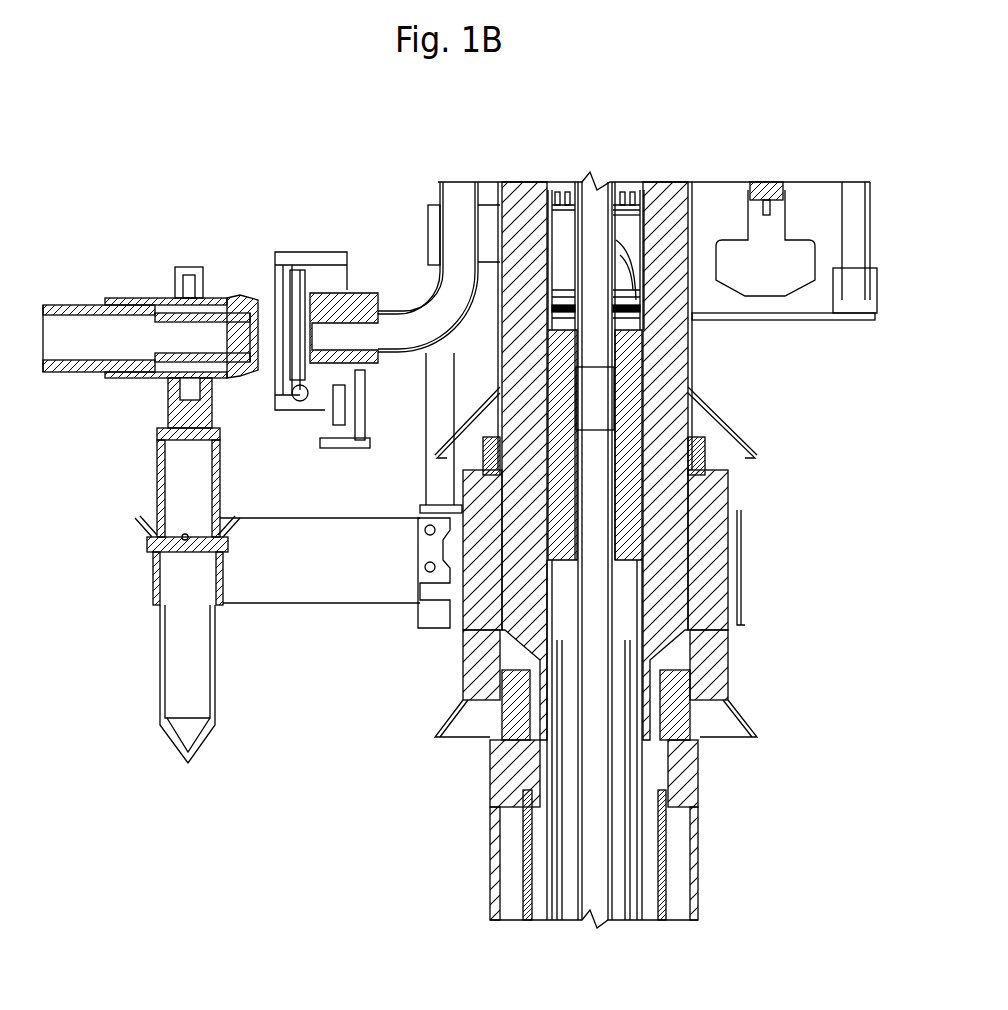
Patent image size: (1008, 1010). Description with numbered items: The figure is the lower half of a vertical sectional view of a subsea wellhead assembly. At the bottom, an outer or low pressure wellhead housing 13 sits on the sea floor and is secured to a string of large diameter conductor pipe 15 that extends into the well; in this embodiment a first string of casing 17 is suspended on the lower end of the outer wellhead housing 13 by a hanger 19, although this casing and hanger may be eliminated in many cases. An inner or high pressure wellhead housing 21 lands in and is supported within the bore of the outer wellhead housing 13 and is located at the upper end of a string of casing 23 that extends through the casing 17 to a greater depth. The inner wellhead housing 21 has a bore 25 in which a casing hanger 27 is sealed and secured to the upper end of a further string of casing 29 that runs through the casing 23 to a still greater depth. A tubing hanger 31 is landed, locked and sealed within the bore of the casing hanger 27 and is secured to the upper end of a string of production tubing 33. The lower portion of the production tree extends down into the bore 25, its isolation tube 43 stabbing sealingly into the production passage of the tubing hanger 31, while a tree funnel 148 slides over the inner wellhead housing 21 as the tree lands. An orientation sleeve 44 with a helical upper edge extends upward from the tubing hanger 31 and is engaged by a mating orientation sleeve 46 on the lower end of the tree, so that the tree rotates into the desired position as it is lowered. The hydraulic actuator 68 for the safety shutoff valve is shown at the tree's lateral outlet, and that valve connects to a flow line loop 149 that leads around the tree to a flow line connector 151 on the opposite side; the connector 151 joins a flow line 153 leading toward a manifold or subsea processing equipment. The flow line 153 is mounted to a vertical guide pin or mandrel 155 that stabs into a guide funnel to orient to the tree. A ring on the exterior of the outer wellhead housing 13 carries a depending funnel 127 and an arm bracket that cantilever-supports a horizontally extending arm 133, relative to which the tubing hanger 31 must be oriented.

The outer wellhead housing 13 is at (703, 588).
The conductor pipe 15 is at (695, 875).
The casing 17 is at (663, 832).
The hanger 19 is at (685, 740).
The inner wellhead housing 21 is at (677, 418).
The casing 23 is at (543, 836).
The bore 25 is at (630, 368).
The casing hanger 27 is at (632, 580).
The casing 29 is at (632, 890).
The tubing hanger 31 is at (563, 390).
The production tubing 33 is at (573, 893).
The isolation tube 43 is at (627, 332).
The orientation sleeve 44 is at (623, 265).
The orientation sleeve 46 is at (627, 223).
The hydraulic actuator 68 is at (793, 212).
The funnel 127 is at (147, 523).
The arm 133 is at (342, 518).
The tree funnel 148 is at (757, 440).
The flow line loop 149 is at (425, 328).
The flow line connector 151 is at (348, 280).
The flow line 153 is at (232, 297).
The guide pin 155 is at (157, 457).